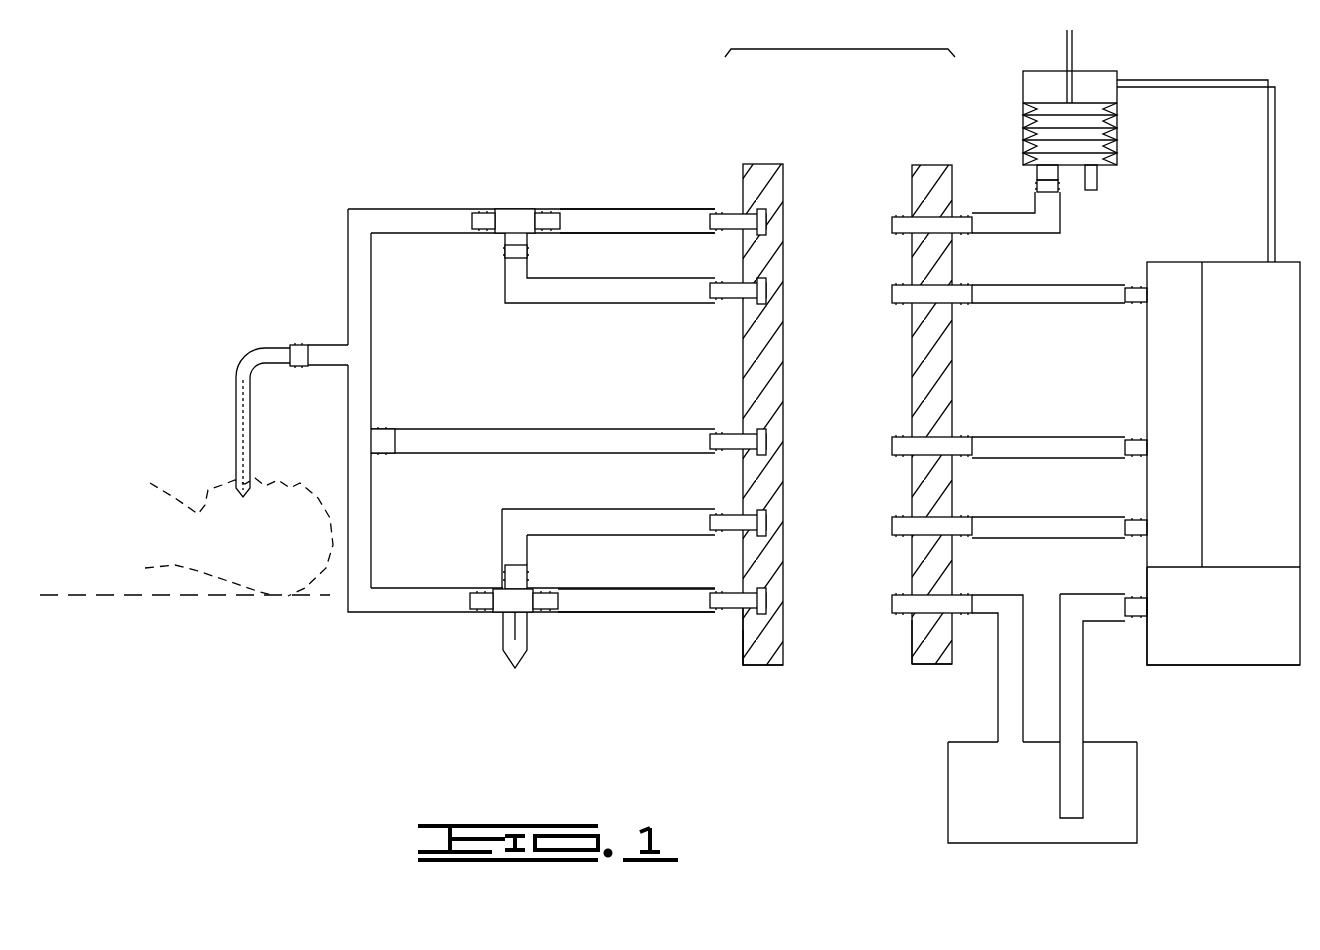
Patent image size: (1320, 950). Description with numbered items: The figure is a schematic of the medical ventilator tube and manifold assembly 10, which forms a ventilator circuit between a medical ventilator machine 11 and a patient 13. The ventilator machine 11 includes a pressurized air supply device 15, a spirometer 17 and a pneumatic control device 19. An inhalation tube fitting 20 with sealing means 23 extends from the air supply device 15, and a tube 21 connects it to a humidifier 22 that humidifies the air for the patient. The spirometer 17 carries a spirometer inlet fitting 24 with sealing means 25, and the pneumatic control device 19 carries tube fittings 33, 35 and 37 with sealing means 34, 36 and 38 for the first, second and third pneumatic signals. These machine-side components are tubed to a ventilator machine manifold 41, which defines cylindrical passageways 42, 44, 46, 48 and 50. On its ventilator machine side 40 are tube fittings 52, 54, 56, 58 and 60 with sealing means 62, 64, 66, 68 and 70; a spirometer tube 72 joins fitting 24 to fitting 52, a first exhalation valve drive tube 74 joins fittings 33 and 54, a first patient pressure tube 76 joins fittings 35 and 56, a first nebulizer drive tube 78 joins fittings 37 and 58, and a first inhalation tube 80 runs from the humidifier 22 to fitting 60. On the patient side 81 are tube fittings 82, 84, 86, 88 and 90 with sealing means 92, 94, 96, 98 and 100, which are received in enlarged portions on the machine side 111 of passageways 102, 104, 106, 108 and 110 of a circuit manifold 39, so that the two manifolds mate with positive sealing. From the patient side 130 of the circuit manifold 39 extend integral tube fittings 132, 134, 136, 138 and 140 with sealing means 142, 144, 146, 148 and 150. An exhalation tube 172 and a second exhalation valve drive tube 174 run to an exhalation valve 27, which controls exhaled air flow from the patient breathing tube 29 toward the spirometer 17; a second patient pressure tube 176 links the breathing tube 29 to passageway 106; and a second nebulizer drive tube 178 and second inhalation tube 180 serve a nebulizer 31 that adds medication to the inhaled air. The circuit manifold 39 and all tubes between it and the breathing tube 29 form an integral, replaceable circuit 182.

The tube and manifold assembly 10 is at (487, 88).
The ventilator machine 11 is at (1237, 665).
The patient 13 is at (284, 490).
The pressurized air supply device 15 is at (1175, 645).
The spirometer 17 is at (1100, 84).
The pneumatic control device 19 is at (1170, 280).
The inhalation tube fitting 20 is at (1140, 620).
The tube 21 is at (1080, 692).
The humidifier 22 is at (955, 790).
The sealing means 23 is at (1130, 597).
The spirometer inlet fitting 24 is at (1040, 182).
The sealing means 25 is at (1065, 185).
The exhalation valve 27 is at (508, 214).
The patient breathing tube 29 is at (250, 358).
The nebulizer 31 is at (508, 630).
The tube fitting 33 is at (1126, 300).
The sealing means 34 is at (1130, 288).
The tube fitting 35 is at (1125, 446).
The sealing means 36 is at (1138, 440).
The tube fitting 37 is at (1125, 526).
The sealing means 38 is at (1138, 520).
The circuit manifold 39 is at (748, 655).
The ventilator machine side 40 is at (952, 648).
The ventilator machine manifold 41 is at (930, 640).
The passageway 42 is at (927, 225).
The passageway 44 is at (930, 290).
The passageway 46 is at (930, 440).
The passageway 48 is at (930, 525).
The passageway 50 is at (935, 600).
The tube fitting 52 is at (975, 226).
The tube fitting 54 is at (975, 294).
The tube fitting 56 is at (975, 446).
The tube fitting 58 is at (975, 526).
The tube fitting 60 is at (968, 610).
The sealing means 62 is at (962, 218).
The sealing means 64 is at (968, 286).
The sealing means 66 is at (965, 438).
The sealing means 68 is at (965, 518).
The sealing means 70 is at (970, 596).
The spirometer tube 72 is at (1060, 230).
The first exhalation valve drive tube 74 is at (1065, 300).
The first patient pressure tube 76 is at (1070, 452).
The first nebulizer drive tube 78 is at (1072, 532).
The first inhalation tube 80 is at (1000, 686).
The patient side 81 is at (912, 630).
The tube fitting 82 is at (892, 226).
The tube fitting 84 is at (892, 294).
The tube fitting 86 is at (892, 446).
The tube fitting 88 is at (892, 525).
The tube fitting 90 is at (892, 605).
The sealing means 92 is at (900, 217).
The sealing means 94 is at (900, 285).
The sealing means 96 is at (900, 437).
The sealing means 98 is at (900, 517).
The sealing means 100 is at (900, 595).
The passageway 102 is at (770, 210).
The passageway 104 is at (762, 293).
The passageway 106 is at (765, 435).
The passageway 108 is at (765, 520).
The passageway 110 is at (765, 598).
The machine side 111 is at (783, 200).
The patient side 130 is at (742, 630).
The tube fitting 132 is at (738, 220).
The tube fitting 134 is at (738, 298).
The tube fitting 136 is at (740, 440).
The tube fitting 138 is at (712, 522).
The tube fitting 140 is at (712, 600).
The sealing means 142 is at (718, 214).
The sealing means 144 is at (720, 300).
The sealing means 146 is at (716, 432).
The sealing means 148 is at (720, 514).
The sealing means 150 is at (724, 593).
The exhalation tube 172 is at (596, 212).
The second exhalation valve drive tube 174 is at (588, 295).
The second patient pressure tube 176 is at (532, 440).
The second nebulizer drive tube 178 is at (556, 520).
The second inhalation tube 180 is at (580, 605).
The circuit 182 is at (418, 200).